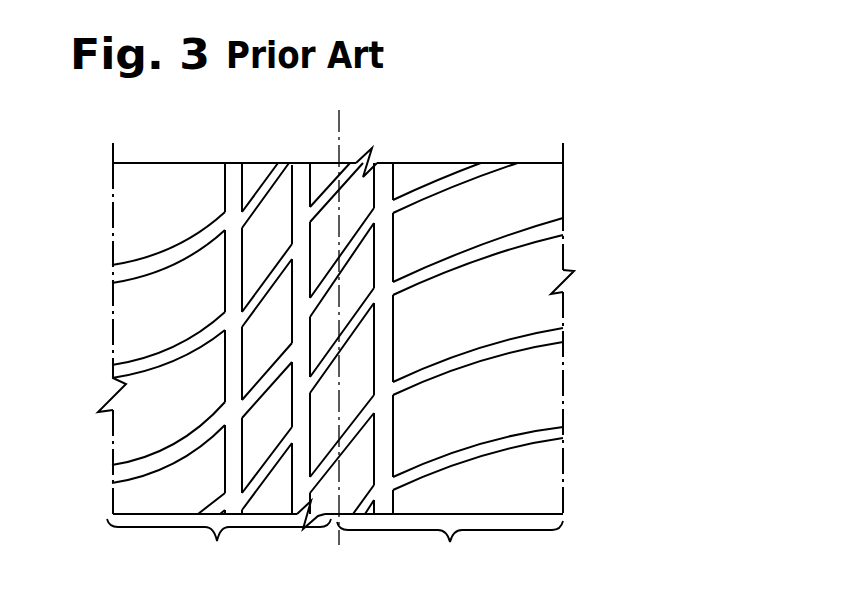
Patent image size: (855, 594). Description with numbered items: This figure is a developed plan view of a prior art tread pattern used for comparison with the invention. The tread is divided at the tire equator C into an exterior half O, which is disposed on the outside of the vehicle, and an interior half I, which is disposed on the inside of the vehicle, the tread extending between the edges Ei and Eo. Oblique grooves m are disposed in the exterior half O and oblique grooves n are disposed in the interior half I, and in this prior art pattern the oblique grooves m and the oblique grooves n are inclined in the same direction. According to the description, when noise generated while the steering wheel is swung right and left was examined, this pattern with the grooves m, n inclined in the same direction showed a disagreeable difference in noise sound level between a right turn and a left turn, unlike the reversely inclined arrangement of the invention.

The oblique grooves n is at (172, 251).
The oblique grooves m is at (510, 238).
The inner tread edge Ei is at (109, 303).
The outer tread edge Eo is at (570, 303).
The tire equator C is at (339, 309).
The interior half I is at (219, 549).
The exterior half O is at (450, 551).